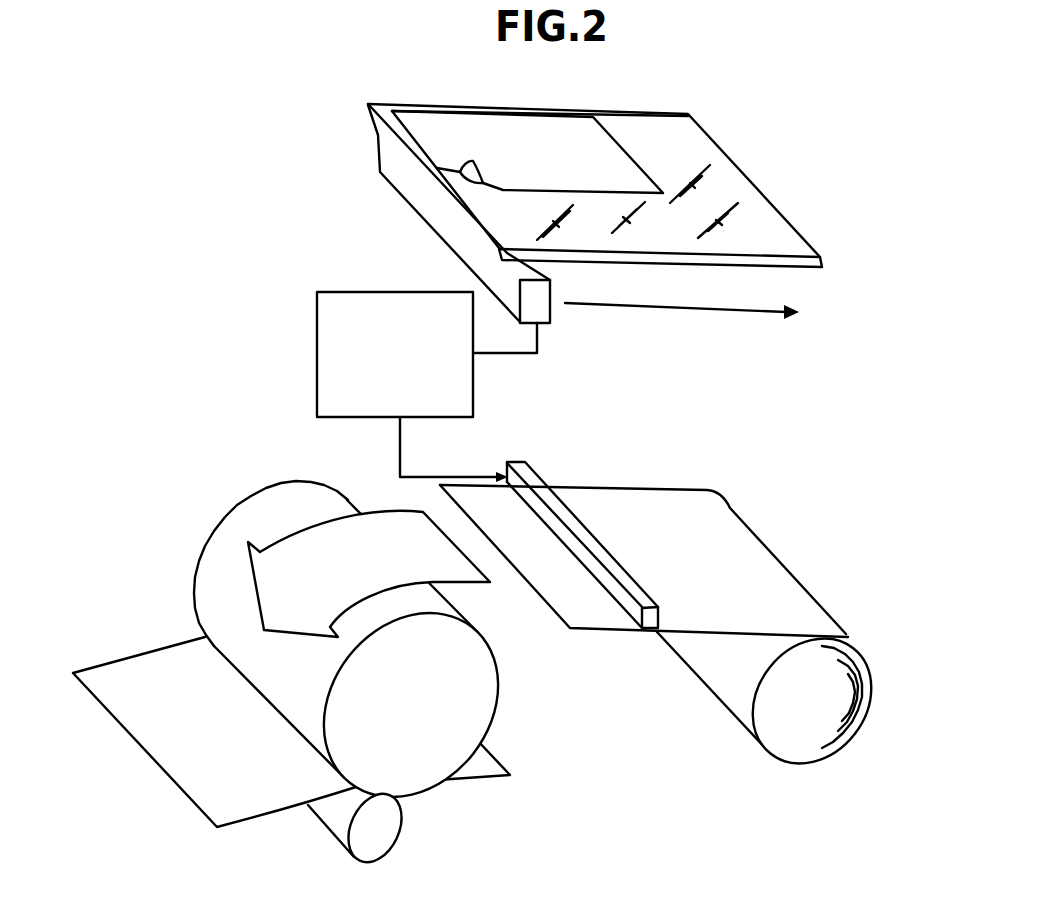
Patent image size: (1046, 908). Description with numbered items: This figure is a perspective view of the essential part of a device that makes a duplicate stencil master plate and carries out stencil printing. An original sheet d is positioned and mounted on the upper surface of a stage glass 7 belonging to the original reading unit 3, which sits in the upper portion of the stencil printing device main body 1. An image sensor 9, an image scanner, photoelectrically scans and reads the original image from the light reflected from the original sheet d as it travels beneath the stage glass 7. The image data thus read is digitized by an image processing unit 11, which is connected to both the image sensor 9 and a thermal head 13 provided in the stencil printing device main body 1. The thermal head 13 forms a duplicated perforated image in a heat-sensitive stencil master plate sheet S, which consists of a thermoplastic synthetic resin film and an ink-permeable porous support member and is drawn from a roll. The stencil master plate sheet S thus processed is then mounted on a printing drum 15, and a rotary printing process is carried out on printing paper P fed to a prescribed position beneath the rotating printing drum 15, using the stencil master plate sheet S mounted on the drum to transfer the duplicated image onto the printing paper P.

The stencil printing device main body 1 is at (368, 630).
The original reading unit 3 is at (733, 145).
The stage glass 7 is at (653, 126).
The original sheet d is at (567, 126).
The image sensor 9 is at (424, 204).
The image processing unit 11 is at (352, 292).
The thermal head 13 is at (552, 500).
The printing drum 15 is at (473, 688).
The stencil master plate sheet S is at (667, 502).
The printing paper P is at (167, 663).